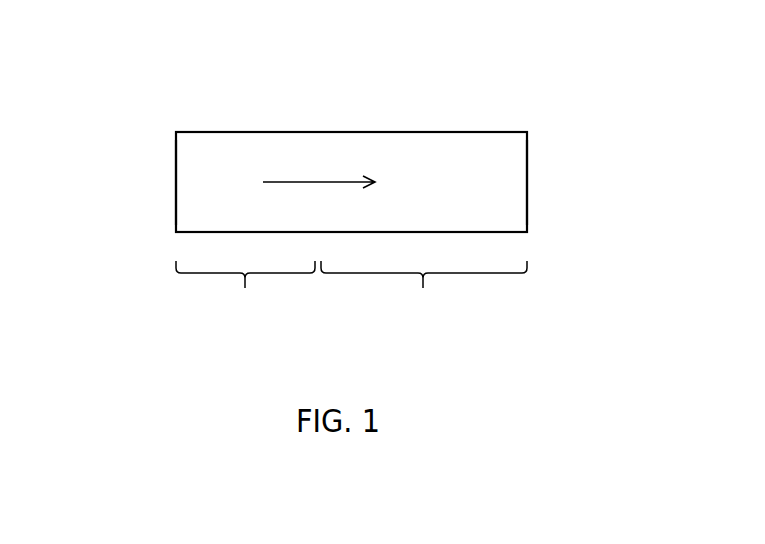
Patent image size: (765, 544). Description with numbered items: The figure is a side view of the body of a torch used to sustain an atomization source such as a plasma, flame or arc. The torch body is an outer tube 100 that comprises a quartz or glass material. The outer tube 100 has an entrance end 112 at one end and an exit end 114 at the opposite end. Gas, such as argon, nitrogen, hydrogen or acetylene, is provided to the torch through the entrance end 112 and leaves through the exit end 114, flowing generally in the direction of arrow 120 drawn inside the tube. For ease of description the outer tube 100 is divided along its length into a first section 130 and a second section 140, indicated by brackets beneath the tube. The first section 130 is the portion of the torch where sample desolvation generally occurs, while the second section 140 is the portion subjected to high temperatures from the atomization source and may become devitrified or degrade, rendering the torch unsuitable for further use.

The outer tube 100 is at (202, 82).
The entrance end 112 is at (177, 182).
The exit end 114 is at (527, 174).
The arrow 120 is at (320, 182).
The first section 130 is at (245, 300).
The second section 140 is at (424, 304).